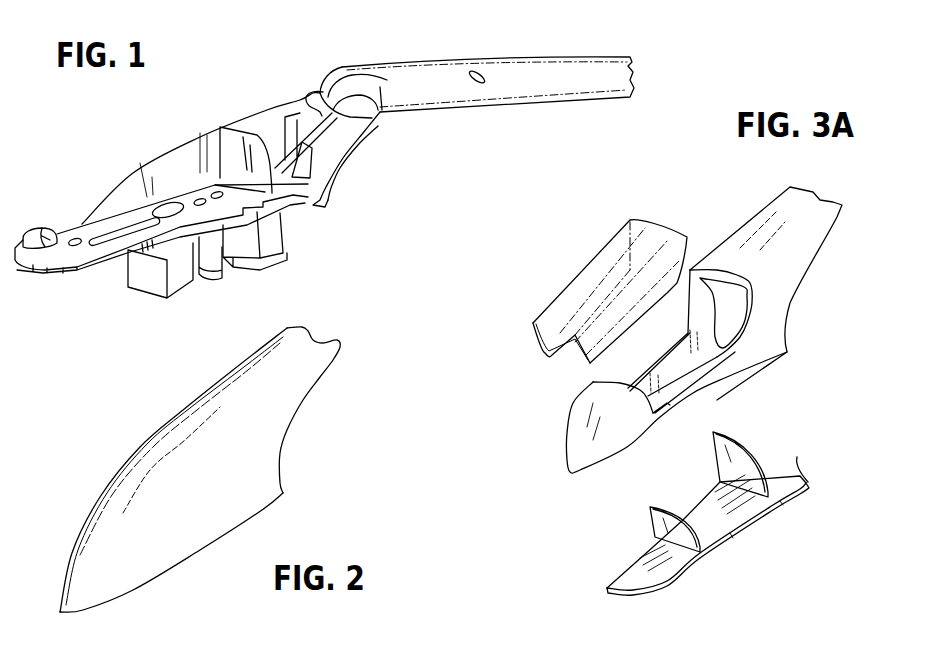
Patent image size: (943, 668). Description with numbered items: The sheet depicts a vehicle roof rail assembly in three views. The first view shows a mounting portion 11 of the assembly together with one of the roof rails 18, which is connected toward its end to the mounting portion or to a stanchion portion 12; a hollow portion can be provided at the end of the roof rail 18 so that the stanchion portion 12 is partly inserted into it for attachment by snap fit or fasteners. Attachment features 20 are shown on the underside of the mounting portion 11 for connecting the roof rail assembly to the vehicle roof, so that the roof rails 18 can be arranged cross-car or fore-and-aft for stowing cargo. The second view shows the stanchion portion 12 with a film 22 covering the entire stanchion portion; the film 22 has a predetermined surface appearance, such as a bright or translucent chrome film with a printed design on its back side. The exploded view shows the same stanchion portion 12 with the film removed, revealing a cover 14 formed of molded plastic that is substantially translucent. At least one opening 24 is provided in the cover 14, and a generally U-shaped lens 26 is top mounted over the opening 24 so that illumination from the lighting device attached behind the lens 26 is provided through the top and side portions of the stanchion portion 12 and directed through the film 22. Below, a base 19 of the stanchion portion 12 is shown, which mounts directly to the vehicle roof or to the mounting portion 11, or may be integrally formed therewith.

In FIG. 1, the mounting portion 11 is at (240, 98).
In FIG. 1, the roof rail 18 is at (410, 78).
In FIG. 1, the attachment feature 20 is at (118, 285).
In FIG. 2, the stanchion portion 12 is at (118, 456).
In FIG. 3A, the stanchion portion 12 is at (532, 253).
In FIG. 2, the film 22 is at (85, 565).
In FIG. 3A, the lens 26 is at (585, 283).
In FIG. 3A, the cover 14 is at (817, 215).
In FIG. 3A, the opening 24 is at (670, 405).
In FIG. 3A, the base 19 is at (680, 565).